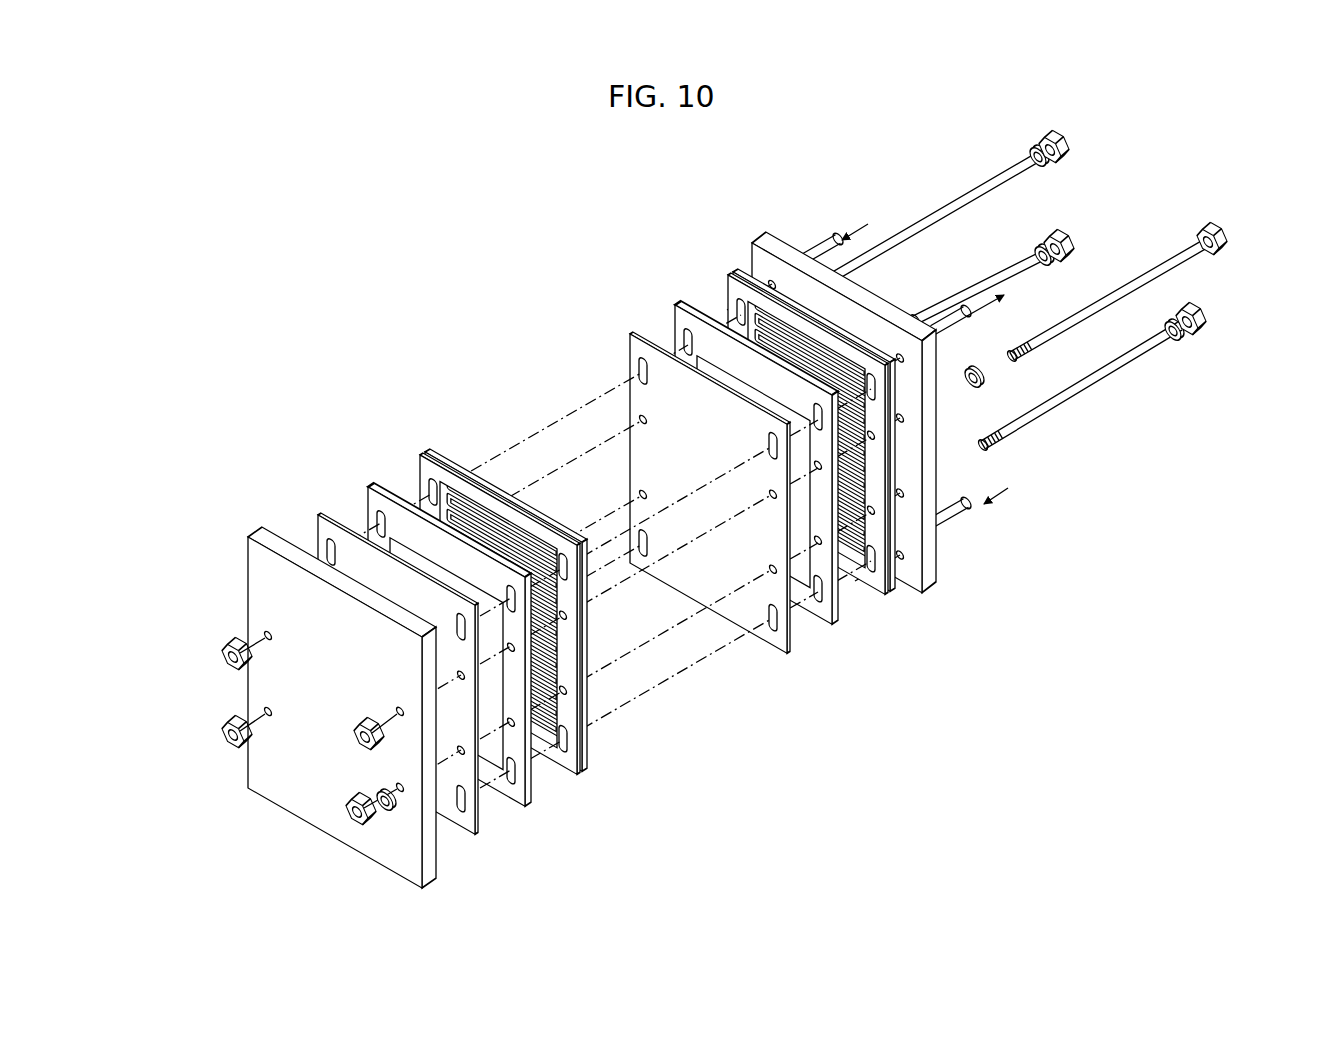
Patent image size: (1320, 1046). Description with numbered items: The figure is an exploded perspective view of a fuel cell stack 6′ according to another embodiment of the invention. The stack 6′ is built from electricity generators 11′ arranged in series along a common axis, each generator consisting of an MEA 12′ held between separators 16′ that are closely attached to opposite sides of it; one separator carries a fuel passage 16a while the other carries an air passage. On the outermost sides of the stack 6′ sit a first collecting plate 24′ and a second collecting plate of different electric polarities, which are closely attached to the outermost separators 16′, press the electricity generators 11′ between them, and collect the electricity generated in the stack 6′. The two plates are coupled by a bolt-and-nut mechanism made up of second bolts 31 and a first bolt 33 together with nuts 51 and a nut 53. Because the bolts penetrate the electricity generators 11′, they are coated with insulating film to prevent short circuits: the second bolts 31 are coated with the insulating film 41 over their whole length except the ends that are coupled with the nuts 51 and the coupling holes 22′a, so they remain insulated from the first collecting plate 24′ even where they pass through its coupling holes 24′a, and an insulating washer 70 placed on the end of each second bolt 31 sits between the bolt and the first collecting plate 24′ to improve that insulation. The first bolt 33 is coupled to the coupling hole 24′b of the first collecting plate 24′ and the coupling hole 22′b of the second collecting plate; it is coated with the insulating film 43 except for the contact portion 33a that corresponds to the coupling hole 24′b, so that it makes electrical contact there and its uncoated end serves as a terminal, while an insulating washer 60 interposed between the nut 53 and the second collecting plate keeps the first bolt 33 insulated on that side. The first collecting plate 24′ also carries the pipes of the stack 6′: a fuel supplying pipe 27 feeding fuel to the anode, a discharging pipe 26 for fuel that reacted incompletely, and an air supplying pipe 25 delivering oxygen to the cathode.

The stack 6′ is at (634, 316).
The electricity generators 11′ is at (937, 662).
The MEA 12′ is at (527, 810).
The separators 16′ is at (480, 838).
The fuel passage 16a is at (908, 592).
The coupling holes 22′a is at (266, 634).
The coupling hole 22′b is at (396, 787).
The first collecting plate 24′ is at (768, 241).
The coupling holes 24′a is at (905, 422).
The coupling hole 24′b is at (905, 497).
The air supplying pipe 25 is at (826, 247).
The discharging pipe 26 is at (962, 323).
The fuel supplying pipe 27 is at (961, 521).
The second bolts 31 is at (1062, 156).
The first bolt 33 is at (1194, 330).
The contact portion 33a is at (1176, 340).
The insulating film 41 is at (952, 205).
The insulating film 43 is at (1083, 394).
The nuts 51 is at (226, 657).
The nut 53 is at (354, 818).
The insulating washer 60 is at (387, 810).
The insulating washer 70 is at (1044, 152).